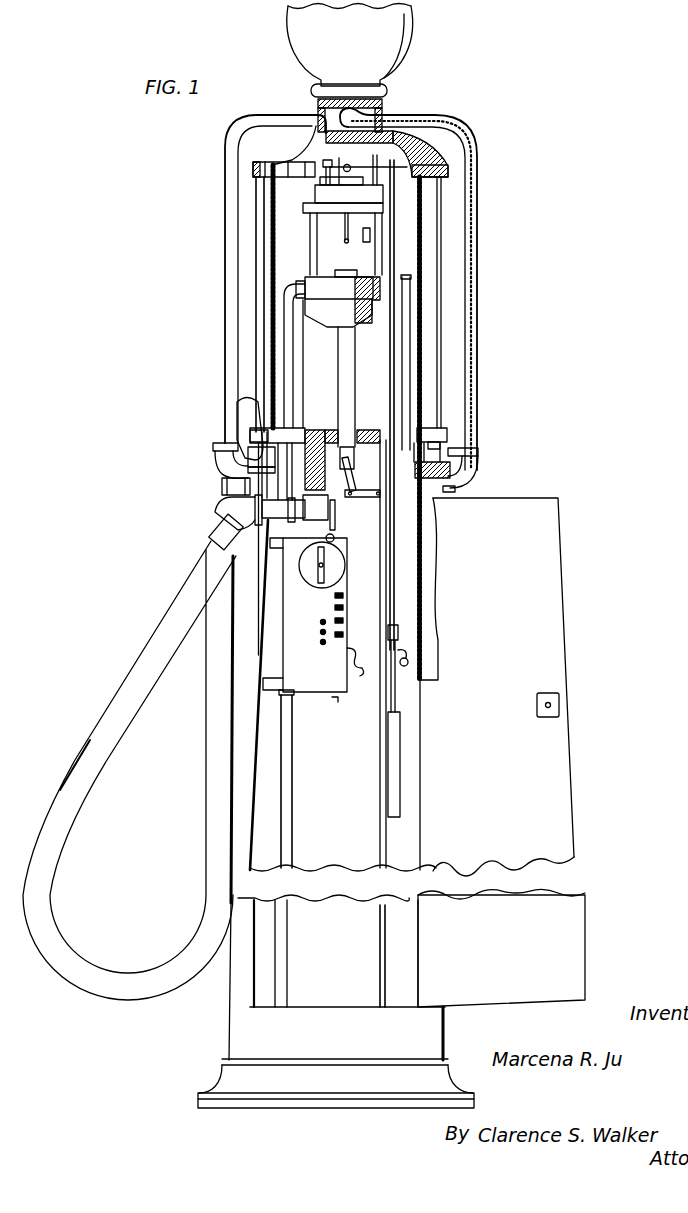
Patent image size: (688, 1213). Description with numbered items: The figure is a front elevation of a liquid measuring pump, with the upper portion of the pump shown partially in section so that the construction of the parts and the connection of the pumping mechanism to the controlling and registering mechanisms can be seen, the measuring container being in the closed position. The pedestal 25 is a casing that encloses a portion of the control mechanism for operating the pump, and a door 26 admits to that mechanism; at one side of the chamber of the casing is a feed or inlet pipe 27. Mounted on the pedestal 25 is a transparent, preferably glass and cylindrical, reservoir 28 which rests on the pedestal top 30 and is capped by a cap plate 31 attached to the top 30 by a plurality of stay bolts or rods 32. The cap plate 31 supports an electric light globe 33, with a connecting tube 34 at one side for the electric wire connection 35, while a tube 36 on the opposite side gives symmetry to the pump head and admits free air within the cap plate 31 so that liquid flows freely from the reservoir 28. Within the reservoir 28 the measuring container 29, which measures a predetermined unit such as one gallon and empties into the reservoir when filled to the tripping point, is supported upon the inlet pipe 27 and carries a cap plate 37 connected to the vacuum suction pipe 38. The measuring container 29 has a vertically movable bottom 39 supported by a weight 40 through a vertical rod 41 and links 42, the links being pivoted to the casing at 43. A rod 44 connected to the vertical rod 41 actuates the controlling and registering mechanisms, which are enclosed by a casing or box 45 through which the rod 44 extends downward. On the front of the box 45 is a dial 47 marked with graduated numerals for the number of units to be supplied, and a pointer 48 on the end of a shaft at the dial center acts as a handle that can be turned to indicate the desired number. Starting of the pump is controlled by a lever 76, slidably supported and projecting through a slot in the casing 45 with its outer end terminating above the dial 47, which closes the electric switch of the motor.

The pedestal 25 is at (233, 1027).
The door 26 is at (570, 748).
The feed or inlet pipe 27 is at (292, 803).
The transparent container or reservoir 28 is at (273, 205).
The measuring container 29 is at (316, 240).
The pedestal top 30 is at (298, 428).
The cap plate 31 is at (266, 161).
The stay bolts or rods 32 is at (258, 294).
The electric light globe 33 is at (416, 47).
The connecting tube 34 is at (472, 137).
The electric wire connection 35 is at (477, 182).
The tube 36 is at (225, 353).
The cap plate 37 is at (313, 195).
The vacuum suction pipe 38 is at (396, 236).
The vertically movable bottom 39 is at (356, 348).
The weight 40 is at (398, 772).
The vertical rod 41 is at (352, 455).
The links 42 is at (366, 500).
The pivot 43 is at (352, 527).
The rod 44 is at (320, 627).
The casing or box 45 is at (353, 593).
The dial 47 is at (304, 581).
The pointer 48 is at (325, 588).
The lever 76 is at (326, 538).